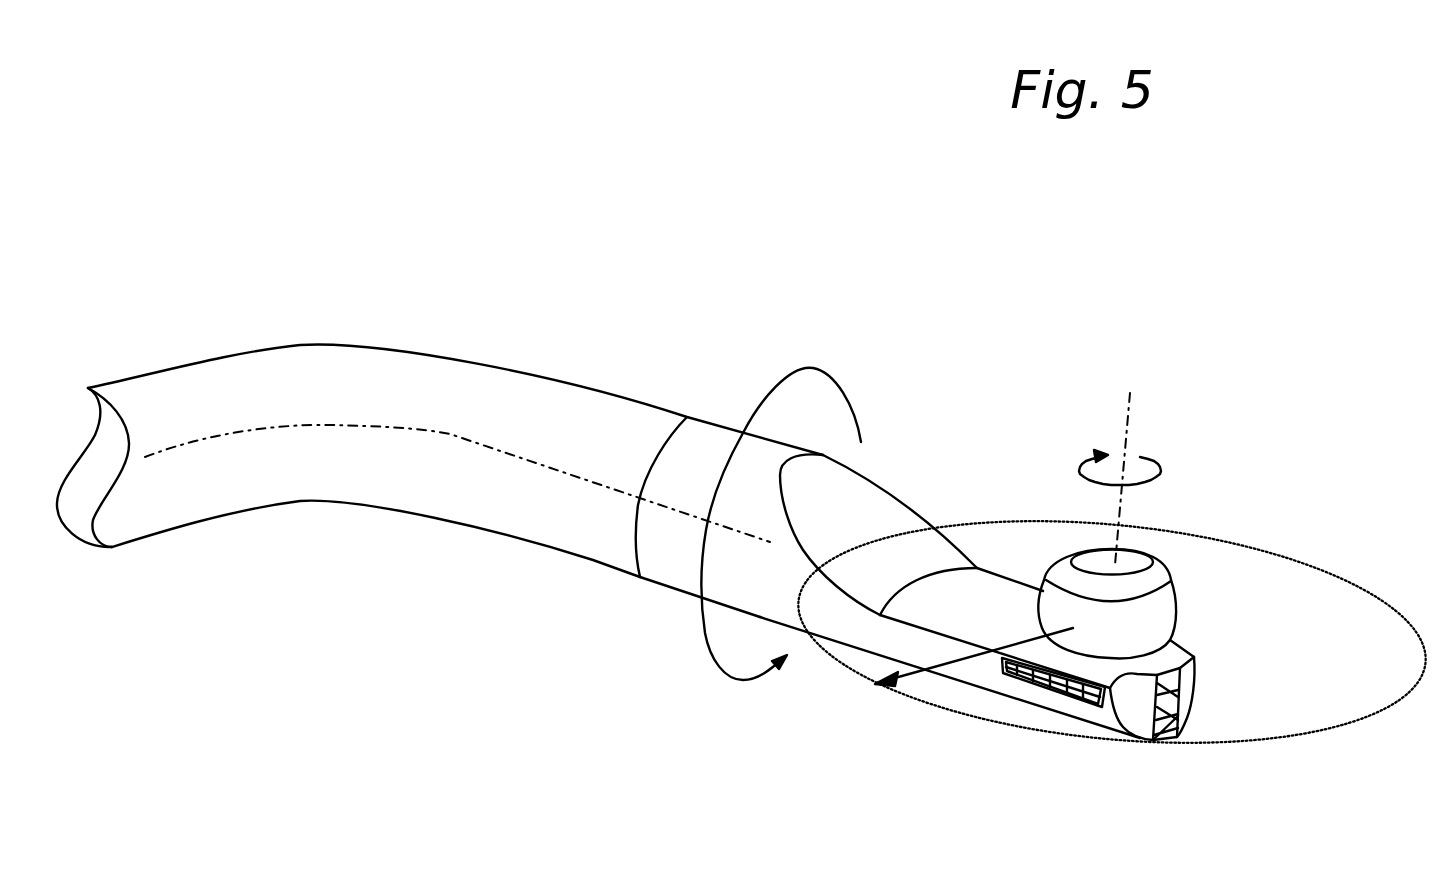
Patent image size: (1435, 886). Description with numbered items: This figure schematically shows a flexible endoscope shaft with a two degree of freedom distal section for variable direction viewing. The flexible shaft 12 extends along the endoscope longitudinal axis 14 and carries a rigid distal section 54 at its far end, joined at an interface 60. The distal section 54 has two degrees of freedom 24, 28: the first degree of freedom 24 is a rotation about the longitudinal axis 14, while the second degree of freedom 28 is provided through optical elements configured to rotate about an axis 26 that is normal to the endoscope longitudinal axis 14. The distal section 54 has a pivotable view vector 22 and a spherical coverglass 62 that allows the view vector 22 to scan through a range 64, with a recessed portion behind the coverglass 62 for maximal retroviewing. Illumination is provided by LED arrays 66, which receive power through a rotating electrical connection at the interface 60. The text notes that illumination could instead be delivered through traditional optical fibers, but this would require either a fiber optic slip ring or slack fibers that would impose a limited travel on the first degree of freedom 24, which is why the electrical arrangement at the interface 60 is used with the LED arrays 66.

The flexible shaft 12 is at (367, 487).
The endoscope longitudinal axis 14 is at (440, 437).
The pivotable view vector 22 is at (910, 674).
The first degree of freedom 24 is at (808, 366).
The axis normal to the longitudinal axis 26 is at (1128, 423).
The second degree of freedom 28 is at (1165, 473).
The rigid distal section 54 is at (682, 586).
The interface 60 is at (647, 447).
The spherical coverglass 62 is at (1177, 608).
The scanning range 64 is at (1280, 742).
The LED arrays 66 is at (1165, 717).